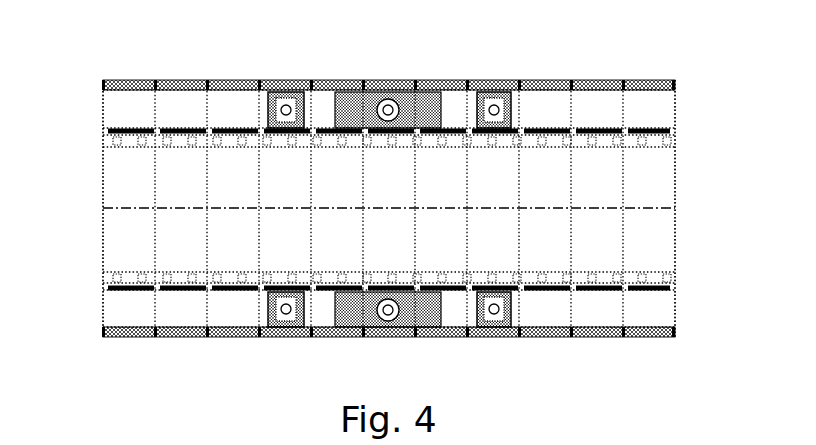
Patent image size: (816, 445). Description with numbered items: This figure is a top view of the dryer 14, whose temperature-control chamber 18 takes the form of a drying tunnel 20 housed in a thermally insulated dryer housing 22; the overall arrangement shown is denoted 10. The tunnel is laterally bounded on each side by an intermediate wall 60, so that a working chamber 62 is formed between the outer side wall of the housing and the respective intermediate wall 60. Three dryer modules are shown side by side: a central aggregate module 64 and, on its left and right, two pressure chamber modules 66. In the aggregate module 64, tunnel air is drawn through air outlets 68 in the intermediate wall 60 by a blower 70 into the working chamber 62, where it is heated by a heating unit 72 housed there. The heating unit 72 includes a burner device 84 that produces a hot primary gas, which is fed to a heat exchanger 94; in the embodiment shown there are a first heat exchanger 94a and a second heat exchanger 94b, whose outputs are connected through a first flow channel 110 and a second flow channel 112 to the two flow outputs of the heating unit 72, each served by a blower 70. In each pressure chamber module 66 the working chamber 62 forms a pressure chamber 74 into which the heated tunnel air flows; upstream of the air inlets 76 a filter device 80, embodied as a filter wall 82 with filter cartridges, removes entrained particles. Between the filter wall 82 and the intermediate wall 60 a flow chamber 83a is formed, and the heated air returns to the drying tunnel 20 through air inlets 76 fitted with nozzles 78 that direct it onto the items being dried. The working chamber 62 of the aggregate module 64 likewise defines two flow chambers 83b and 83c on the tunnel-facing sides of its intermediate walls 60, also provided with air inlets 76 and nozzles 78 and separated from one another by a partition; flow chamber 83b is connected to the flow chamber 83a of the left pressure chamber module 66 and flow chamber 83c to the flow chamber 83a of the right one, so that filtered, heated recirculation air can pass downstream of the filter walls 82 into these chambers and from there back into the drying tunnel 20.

The track assembly 10 is at (578, 76).
The dryer 14 is at (620, 76).
The temperature-control chamber 18 is at (674, 153).
The drying tunnel 20 is at (667, 195).
The dryer housing 22 is at (172, 80).
The intermediate wall 60 is at (660, 140).
The working chamber 62 is at (327, 110).
The aggregate module 64 is at (455, 107).
The pressure chamber module 66 is at (212, 80).
The air outlet 68 is at (351, 150).
The blower 70 is at (265, 104).
The heating unit 72 is at (405, 90).
The pressure chamber 74 is at (117, 108).
The air inlet 76 is at (117, 153).
The nozzle 78 is at (117, 186).
The filter device 80 is at (133, 126).
The filter wall 82 is at (157, 128).
The flow chamber 83a is at (180, 142).
The flow chamber 83b is at (331, 146).
The flow chamber 83c is at (477, 148).
The burner device 84 is at (450, 80).
The heat exchanger 94 is at (363, 83).
The first heat exchanger 94a is at (350, 117).
The second heat exchanger 94b is at (425, 112).
The first flow channel 110 is at (312, 100).
The second flow channel 112 is at (517, 90).